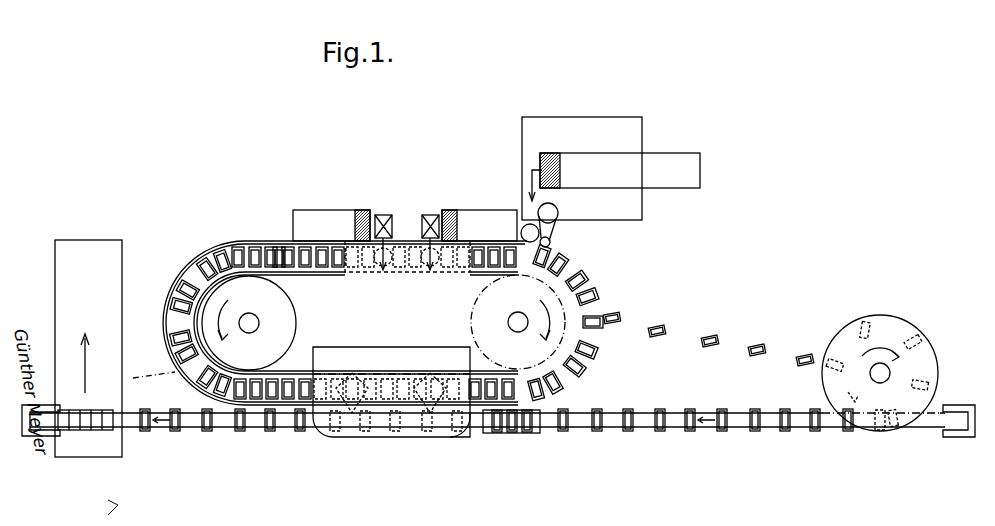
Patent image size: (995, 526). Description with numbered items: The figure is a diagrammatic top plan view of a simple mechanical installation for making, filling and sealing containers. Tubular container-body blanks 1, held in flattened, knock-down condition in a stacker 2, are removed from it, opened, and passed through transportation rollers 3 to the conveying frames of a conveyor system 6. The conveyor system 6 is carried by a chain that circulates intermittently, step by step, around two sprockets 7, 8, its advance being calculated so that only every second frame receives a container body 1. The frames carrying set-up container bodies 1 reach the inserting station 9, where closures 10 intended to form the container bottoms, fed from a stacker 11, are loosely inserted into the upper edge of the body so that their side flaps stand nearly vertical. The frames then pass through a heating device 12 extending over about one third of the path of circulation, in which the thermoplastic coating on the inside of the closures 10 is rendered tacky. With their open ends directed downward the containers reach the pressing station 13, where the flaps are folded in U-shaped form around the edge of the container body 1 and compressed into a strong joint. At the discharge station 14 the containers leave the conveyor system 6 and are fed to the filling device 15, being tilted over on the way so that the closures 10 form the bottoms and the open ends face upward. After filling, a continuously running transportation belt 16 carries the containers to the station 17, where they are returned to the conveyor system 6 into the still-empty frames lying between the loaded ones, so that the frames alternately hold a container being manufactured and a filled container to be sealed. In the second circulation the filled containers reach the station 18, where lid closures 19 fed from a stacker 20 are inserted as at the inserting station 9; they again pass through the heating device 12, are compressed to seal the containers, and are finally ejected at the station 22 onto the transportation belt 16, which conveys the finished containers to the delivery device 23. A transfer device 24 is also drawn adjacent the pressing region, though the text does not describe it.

The tubular container-body blank 1 is at (549, 153).
The stacker 2 is at (600, 153).
The transportation rollers 3 is at (556, 219).
The conveyor system 6 is at (279, 278).
The sprocket 7 is at (472, 318).
The sprocket 8 is at (298, 324).
The inserting station 9 is at (421, 275).
The closure 10 is at (433, 215).
The stacker 11 is at (481, 210).
The heating device 12 is at (221, 242).
The pressing station 13 is at (352, 438).
The discharge station 14 is at (595, 314).
The filling device 15 is at (883, 315).
The transportation belt 16 is at (612, 431).
The station 17 is at (497, 434).
The station 18 is at (379, 275).
The closure 19 is at (383, 215).
The stacker 20 is at (325, 210).
The station 22 is at (462, 434).
The delivery device 23 is at (88, 434).
The transfer device 24 is at (430, 438).